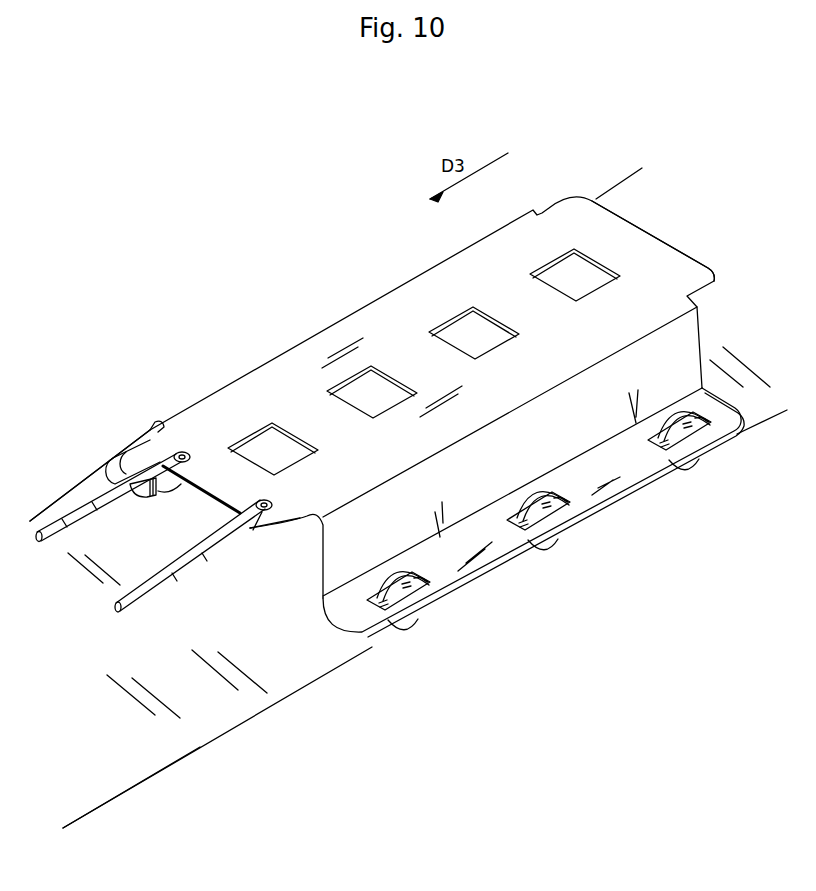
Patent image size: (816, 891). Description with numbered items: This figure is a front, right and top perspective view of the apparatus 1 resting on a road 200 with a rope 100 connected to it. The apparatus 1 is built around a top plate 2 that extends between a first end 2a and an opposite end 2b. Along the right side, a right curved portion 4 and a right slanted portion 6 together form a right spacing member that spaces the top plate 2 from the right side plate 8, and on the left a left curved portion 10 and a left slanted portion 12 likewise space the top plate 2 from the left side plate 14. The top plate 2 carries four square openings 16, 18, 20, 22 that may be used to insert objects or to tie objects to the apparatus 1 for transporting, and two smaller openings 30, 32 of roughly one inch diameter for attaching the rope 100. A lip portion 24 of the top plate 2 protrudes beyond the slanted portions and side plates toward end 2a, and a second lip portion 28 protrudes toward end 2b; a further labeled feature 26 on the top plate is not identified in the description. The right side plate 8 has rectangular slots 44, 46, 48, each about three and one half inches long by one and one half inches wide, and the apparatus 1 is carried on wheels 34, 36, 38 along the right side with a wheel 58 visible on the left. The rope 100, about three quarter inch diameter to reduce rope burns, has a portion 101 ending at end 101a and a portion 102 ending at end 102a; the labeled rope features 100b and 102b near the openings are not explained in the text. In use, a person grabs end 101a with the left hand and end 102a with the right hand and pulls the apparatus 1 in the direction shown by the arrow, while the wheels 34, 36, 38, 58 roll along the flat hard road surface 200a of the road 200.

The apparatus 1 is at (343, 269).
The top plate 2 is at (422, 292).
The end of top plate 2a is at (233, 512).
The end of top plate 2b is at (660, 238).
The right curved portion 4 is at (320, 521).
The right slanted portion 6 is at (476, 498).
The right side plate 8 is at (367, 610).
The left curved portion 10 is at (158, 425).
The left slanted portion 12 is at (153, 500).
The left side plate 14 is at (117, 472).
The opening 16 is at (275, 453).
The opening 18 is at (368, 398).
The opening 20 is at (463, 337).
The opening 22 is at (603, 277).
The lip portion 24 is at (218, 487).
The top surface region 26 is at (290, 383).
The lip portion 28 is at (632, 238).
The opening 30 is at (182, 453).
The opening 32 is at (272, 503).
The wheel 34 is at (403, 580).
The wheel 36 is at (527, 512).
The wheel 38 is at (667, 423).
The slot 44 is at (425, 581).
The slot 46 is at (560, 500).
The slot 48 is at (697, 421).
The wheel 58 is at (177, 493).
The rope 100 is at (83, 500).
The wire bend 100b is at (150, 430).
The rope portion 101 is at (87, 517).
The rope end 101a is at (38, 542).
The rope portion 102 is at (157, 584).
The rope end 102a is at (117, 613).
The second wire bend 102b is at (258, 514).
The road 200 is at (225, 722).
The flat hard road surface 200a is at (296, 678).